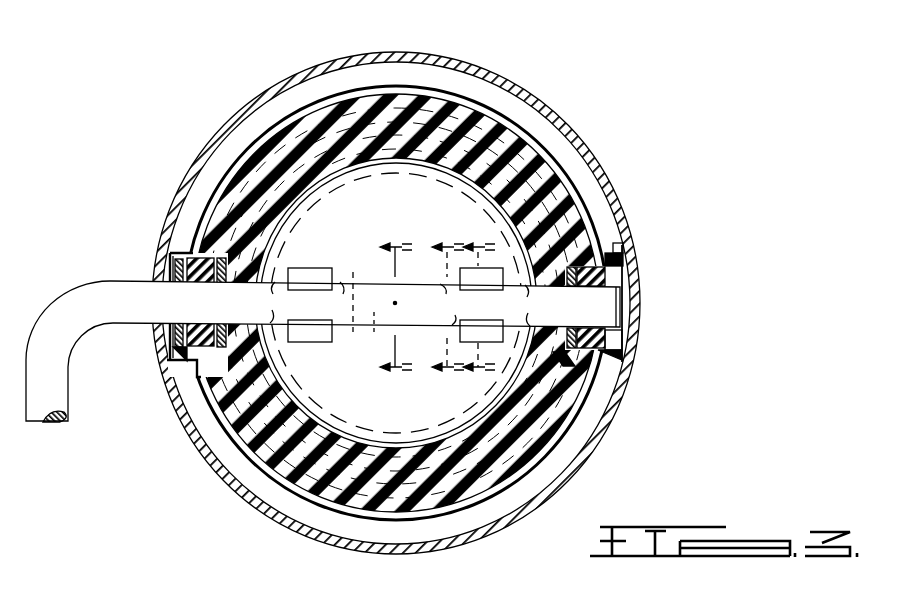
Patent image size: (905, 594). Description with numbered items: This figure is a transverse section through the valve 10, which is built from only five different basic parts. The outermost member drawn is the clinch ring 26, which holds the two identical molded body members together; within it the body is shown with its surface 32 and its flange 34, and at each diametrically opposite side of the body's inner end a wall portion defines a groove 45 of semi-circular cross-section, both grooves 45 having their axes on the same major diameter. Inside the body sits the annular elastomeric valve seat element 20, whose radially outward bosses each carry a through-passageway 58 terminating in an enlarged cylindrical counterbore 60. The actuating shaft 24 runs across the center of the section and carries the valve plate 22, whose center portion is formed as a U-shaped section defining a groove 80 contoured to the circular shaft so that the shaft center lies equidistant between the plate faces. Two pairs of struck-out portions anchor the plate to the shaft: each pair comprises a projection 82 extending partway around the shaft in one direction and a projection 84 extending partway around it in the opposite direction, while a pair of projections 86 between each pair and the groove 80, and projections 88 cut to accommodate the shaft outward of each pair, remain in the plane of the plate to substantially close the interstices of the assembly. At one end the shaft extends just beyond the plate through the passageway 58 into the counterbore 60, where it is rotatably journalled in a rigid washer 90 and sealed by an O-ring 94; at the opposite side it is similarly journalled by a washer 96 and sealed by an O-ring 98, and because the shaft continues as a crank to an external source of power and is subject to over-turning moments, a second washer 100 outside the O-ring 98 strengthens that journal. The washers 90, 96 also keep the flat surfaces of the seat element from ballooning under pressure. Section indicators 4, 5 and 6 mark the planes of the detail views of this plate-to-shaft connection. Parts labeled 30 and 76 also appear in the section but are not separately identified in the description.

The valve 10 is at (614, 246).
The valve seat element 20 is at (516, 129).
The valve plate 22 is at (372, 216).
The rotatable actuating shaft 24 is at (170, 311).
The clinch ring 26 is at (589, 154).
The inner casing 30 is at (302, 87).
The surface 32 is at (481, 86).
The flange 34 is at (357, 497).
The groove 45 is at (168, 336).
The through-passageway 58 is at (562, 350).
The counter-bore 60 is at (624, 266).
The winding 76 is at (275, 452).
The groove 80 is at (374, 322).
The projection 82 is at (313, 342).
The projection 84 is at (297, 268).
The projections 86 is at (343, 292).
The projections 88 is at (273, 294).
The washer 90 is at (573, 283).
The O-ring 94 is at (624, 340).
The washer 96 is at (230, 262).
The O-ring 98 is at (172, 366).
The second washer 100 is at (176, 264).
The section line 4 is at (393, 311).
The section line 5 is at (445, 310).
The section line 6 is at (479, 310).